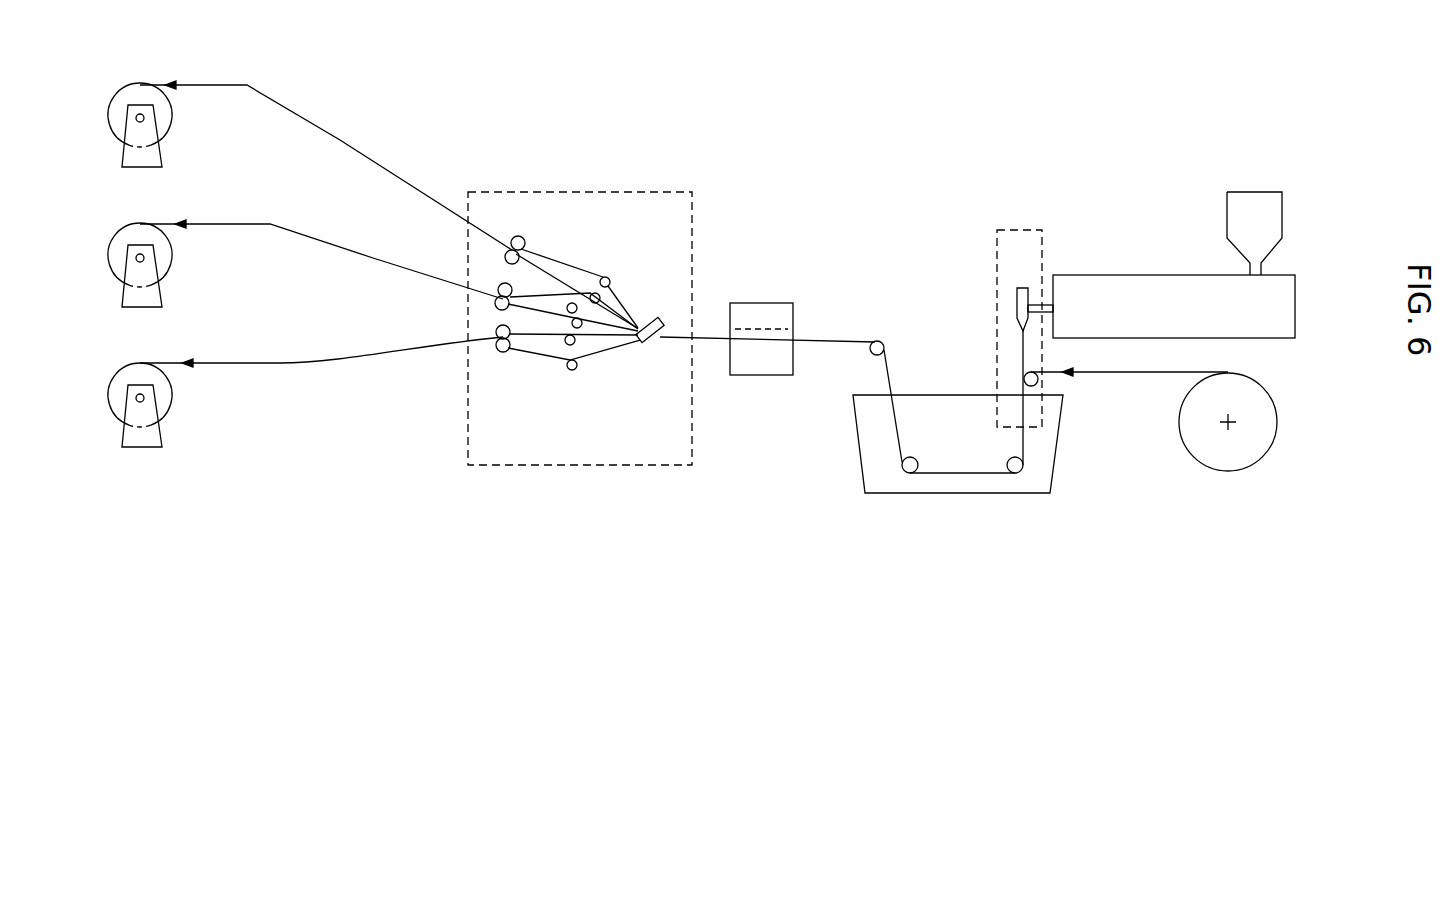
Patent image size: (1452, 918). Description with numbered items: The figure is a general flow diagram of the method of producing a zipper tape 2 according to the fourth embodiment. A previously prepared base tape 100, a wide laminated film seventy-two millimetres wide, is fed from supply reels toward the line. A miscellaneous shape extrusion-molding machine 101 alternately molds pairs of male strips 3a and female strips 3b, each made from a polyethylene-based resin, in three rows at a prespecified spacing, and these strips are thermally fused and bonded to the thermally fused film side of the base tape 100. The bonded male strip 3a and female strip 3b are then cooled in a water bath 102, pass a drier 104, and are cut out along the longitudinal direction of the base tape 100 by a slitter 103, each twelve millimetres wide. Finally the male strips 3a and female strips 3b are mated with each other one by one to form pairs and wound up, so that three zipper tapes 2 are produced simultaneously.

The zipper tape 2 is at (218, 85).
The male strip 3a is at (560, 263).
The female strip 3b is at (573, 290).
The base tape 100 is at (1123, 373).
The miscellaneous shape extrusion-molding machine 101 is at (1140, 238).
The water bath 102 is at (897, 497).
The slitter 103 is at (610, 192).
The drier 104 is at (772, 303).